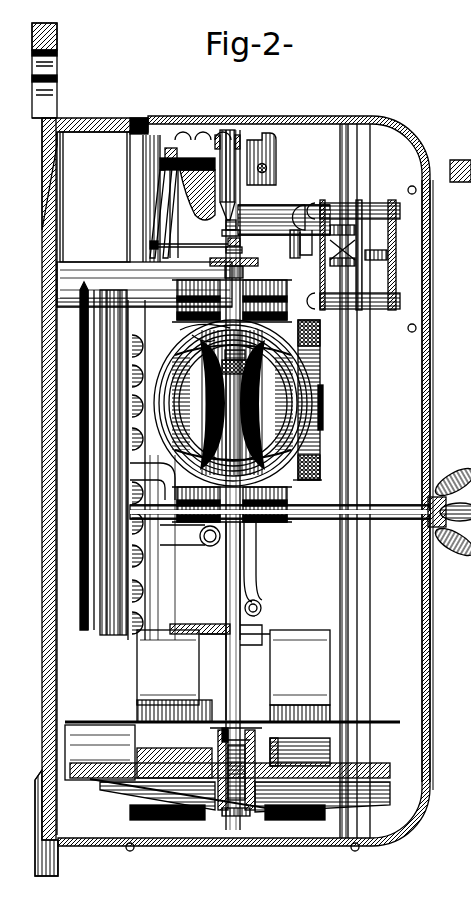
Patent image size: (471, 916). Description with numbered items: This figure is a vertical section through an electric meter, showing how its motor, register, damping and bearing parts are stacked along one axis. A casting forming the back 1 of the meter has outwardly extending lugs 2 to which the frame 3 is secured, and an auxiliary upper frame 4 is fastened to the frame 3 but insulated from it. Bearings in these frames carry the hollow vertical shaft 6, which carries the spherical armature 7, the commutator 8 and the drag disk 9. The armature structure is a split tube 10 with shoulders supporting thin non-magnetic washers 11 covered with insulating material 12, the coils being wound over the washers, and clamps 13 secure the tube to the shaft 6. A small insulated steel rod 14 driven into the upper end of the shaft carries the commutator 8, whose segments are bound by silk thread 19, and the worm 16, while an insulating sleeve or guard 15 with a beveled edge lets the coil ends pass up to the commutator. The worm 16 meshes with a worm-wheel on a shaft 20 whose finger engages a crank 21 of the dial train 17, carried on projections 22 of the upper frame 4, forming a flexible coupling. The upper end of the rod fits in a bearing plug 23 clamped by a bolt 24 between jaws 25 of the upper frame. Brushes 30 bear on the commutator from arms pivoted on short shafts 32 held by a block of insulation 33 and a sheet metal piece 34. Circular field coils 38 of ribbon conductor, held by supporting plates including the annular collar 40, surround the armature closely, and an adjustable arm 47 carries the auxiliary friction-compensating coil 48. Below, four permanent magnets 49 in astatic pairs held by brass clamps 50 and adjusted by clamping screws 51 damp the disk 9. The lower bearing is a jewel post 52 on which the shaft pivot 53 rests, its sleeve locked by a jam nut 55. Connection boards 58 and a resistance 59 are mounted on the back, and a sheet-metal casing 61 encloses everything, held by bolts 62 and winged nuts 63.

The casting forming the back of the meter 1 is at (40, 352).
The lugs or projections 2 is at (108, 265).
The frame 3 is at (258, 635).
The auxiliary upper frame 4 is at (198, 190).
The vertical shaft 6 is at (224, 597).
The armature 7 is at (300, 420).
The commutator 8 is at (238, 250).
The drag disk 9 is at (126, 722).
The split tube 10 is at (285, 352).
The support or washer 11 is at (192, 347).
The insulating material 12 is at (188, 340).
The clamps 13 is at (322, 372).
The steel rod 14 is at (232, 226).
The guard or insulating sleeve 15 is at (240, 265).
The worm 16 is at (238, 242).
The dial train 17 is at (330, 268).
The silk thread 19 is at (228, 243).
The shaft 20 is at (262, 220).
The crank 21 is at (306, 250).
The projections 22 is at (305, 210).
The upper bearing plug 23 is at (218, 142).
The clamping bolt 24 is at (266, 174).
The jaws 25 is at (276, 156).
The brushes 30 is at (142, 244).
The short shaft 32 is at (158, 182).
The block of insulation 33 is at (175, 197).
The sheet metal piece 34 is at (165, 153).
The field coils 38 is at (178, 287).
The supporting plate or annular collar 40 is at (283, 522).
The adjustable arm 47 is at (323, 398).
The auxiliary field coil 48 is at (310, 480).
The permanent magnets 49 is at (233, 672).
The brass clamp 50 is at (334, 743).
The clamping screws 51 is at (140, 805).
The jewel post 52 is at (240, 806).
The pivot 53 is at (252, 735).
The jam nut 55 is at (433, 240).
The connection boards 58 is at (110, 410).
The resistance 59 is at (80, 445).
The casing 61 is at (432, 609).
The bolts 62 is at (398, 520).
The winged nuts 63 is at (447, 548).